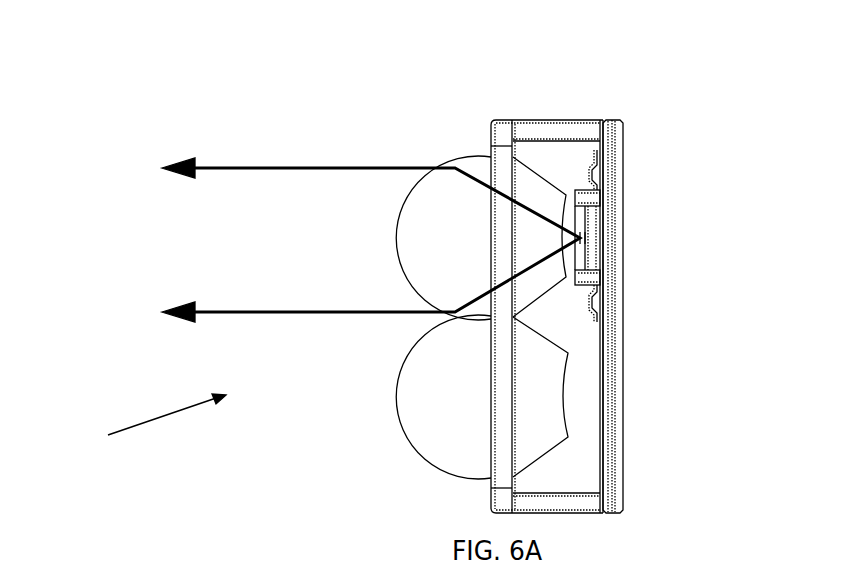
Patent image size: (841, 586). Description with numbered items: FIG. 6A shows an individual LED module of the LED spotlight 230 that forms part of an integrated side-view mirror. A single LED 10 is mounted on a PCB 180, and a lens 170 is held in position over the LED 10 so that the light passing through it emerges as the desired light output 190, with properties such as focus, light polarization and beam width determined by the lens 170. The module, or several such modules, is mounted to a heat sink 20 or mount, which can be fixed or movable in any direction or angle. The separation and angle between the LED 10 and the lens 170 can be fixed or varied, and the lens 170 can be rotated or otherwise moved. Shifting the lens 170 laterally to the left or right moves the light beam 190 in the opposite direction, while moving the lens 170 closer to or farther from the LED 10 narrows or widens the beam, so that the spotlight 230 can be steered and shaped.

The LED 10 is at (578, 236).
The heat sink 20 is at (581, 190).
The lens 170 is at (428, 450).
The PCB 180 is at (622, 267).
The light output 190 is at (307, 158).
The spotlight 230 is at (134, 425).